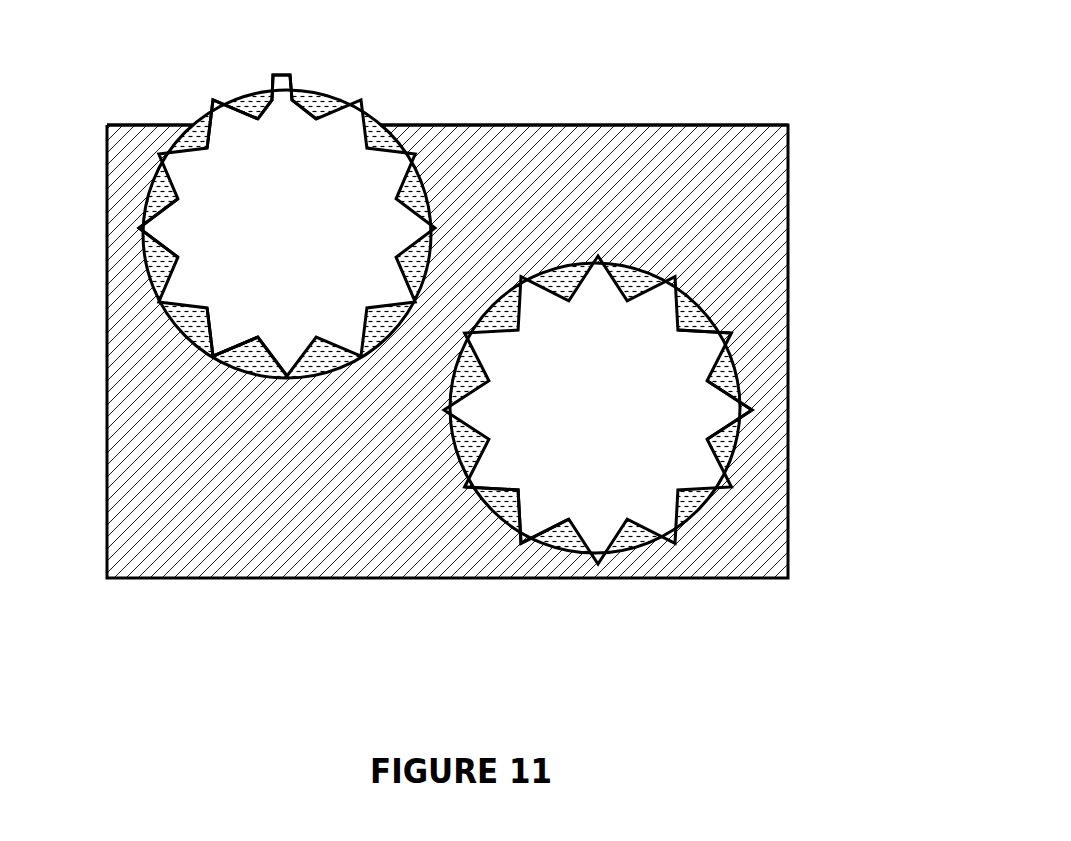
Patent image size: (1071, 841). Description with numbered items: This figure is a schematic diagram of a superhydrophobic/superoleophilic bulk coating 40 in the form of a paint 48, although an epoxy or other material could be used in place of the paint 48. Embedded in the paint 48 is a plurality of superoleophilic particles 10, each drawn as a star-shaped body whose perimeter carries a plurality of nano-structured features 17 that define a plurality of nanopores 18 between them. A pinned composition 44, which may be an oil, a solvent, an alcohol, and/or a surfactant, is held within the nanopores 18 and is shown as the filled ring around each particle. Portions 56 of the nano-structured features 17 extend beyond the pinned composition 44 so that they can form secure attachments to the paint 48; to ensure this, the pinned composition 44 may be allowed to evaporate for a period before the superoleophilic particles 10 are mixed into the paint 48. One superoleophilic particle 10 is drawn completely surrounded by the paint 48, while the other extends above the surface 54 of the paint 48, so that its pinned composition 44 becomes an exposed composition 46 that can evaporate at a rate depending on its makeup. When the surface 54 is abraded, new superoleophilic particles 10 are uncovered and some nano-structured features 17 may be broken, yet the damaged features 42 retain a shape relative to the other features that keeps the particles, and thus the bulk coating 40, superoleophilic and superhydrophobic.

The superoleophilic particles 10 is at (311, 171).
The nano-structured features 17 is at (201, 96).
The nanopores 18 is at (745, 364).
The bulk coating 40 is at (650, 93).
The damaged features 42 is at (265, 66).
The pinned composition 44 is at (157, 194).
The exposed composition 46 is at (324, 105).
The paint 48 is at (644, 189).
The surface 54 is at (508, 118).
The portions 56 is at (202, 363).